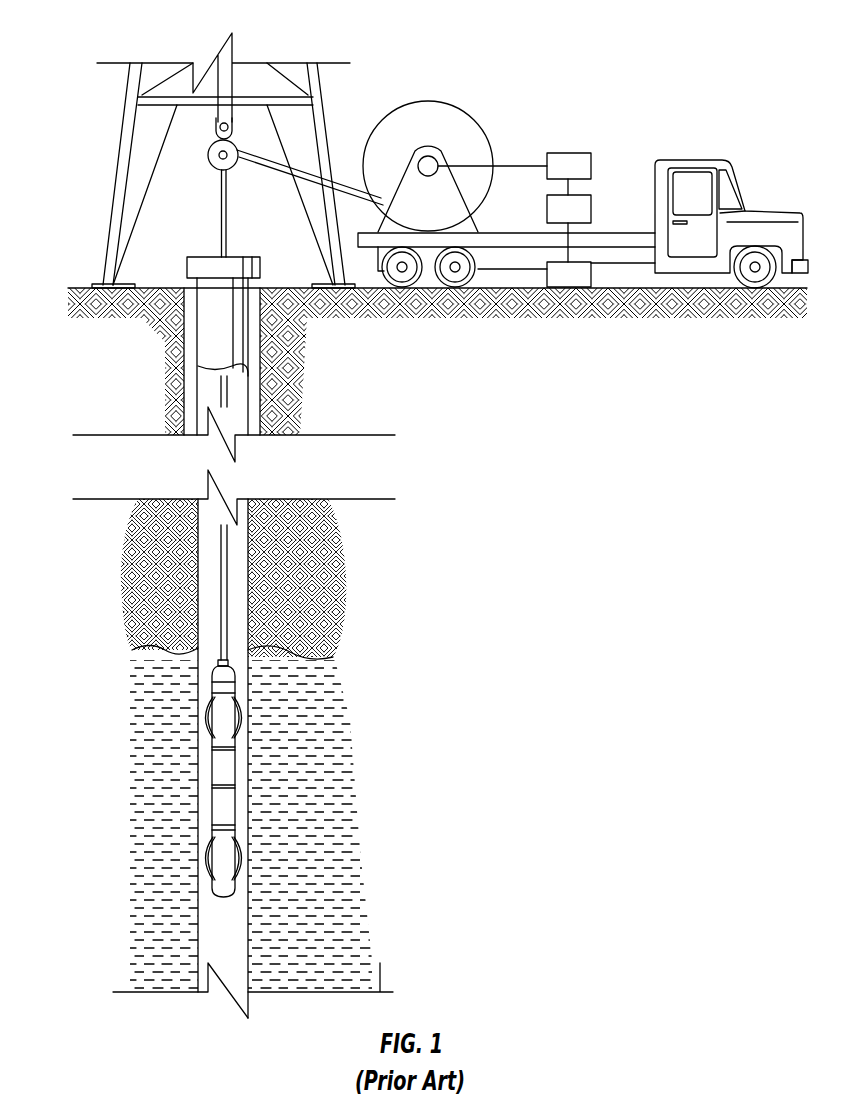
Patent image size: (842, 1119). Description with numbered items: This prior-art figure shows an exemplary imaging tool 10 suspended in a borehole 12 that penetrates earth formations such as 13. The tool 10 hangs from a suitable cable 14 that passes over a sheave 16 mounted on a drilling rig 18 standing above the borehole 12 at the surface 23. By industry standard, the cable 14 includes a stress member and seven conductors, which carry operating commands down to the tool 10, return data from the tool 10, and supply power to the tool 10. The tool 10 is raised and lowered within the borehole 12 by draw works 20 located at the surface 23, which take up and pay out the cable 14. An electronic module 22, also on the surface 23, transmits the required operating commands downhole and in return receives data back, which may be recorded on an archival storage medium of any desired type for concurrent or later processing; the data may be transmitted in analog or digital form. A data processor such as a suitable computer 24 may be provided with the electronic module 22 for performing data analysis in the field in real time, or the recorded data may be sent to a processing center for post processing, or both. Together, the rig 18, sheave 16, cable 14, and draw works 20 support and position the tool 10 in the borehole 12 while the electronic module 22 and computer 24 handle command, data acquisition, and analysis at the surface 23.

The imaging tool 10 is at (237, 772).
The borehole 12 is at (250, 560).
The earth formations 13 is at (370, 610).
The cable 14 is at (221, 242).
The sheave 16 is at (207, 157).
The drilling rig 18 is at (122, 108).
The draw works 20 is at (428, 100).
The electronic module 22 is at (580, 153).
The surface 23 is at (82, 288).
The computer 24 is at (580, 195).